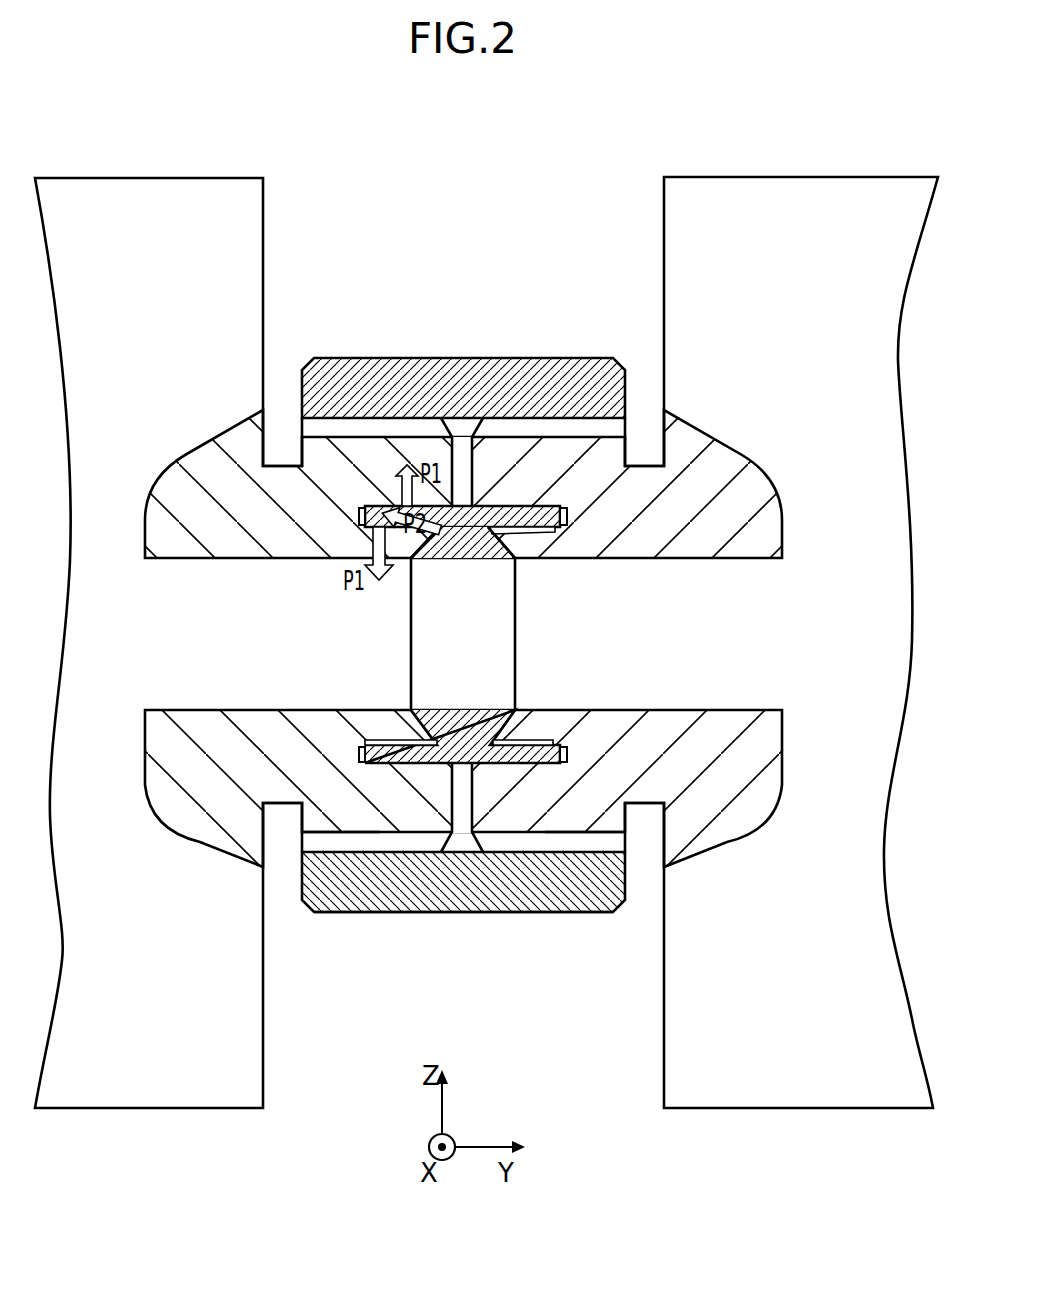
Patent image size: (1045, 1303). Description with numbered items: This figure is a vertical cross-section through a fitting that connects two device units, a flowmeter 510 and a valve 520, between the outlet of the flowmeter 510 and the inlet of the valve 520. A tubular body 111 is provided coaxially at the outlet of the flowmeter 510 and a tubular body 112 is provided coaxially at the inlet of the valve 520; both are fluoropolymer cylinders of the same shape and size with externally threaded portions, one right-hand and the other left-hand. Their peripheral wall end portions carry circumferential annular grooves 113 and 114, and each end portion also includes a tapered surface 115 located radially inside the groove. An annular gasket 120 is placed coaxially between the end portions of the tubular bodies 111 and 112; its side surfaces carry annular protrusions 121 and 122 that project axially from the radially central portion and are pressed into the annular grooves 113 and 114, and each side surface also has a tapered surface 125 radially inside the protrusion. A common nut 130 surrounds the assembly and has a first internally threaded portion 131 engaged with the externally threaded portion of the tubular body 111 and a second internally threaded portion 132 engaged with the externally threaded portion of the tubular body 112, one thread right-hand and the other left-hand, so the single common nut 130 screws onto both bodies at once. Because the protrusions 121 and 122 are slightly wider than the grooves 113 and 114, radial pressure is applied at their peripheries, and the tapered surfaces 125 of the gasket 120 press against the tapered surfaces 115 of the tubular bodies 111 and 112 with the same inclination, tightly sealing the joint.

The tubular body on the flowmeter 111 is at (331, 847).
The tubular body on the valve 112 is at (594, 847).
The annular groove 113 is at (357, 514).
The annular groove 114 is at (567, 515).
The tapered surface 115 is at (425, 560).
The gasket 120 is at (459, 495).
The annular protrusion 121 is at (387, 506).
The annular protrusion 122 is at (526, 505).
The tapered surface 125 is at (408, 558).
The common nut 130 is at (462, 913).
The first internally threaded portion 131 is at (415, 846).
The second internally threaded portion 132 is at (530, 845).
The flowmeter 510 is at (140, 178).
The valve 520 is at (802, 177).